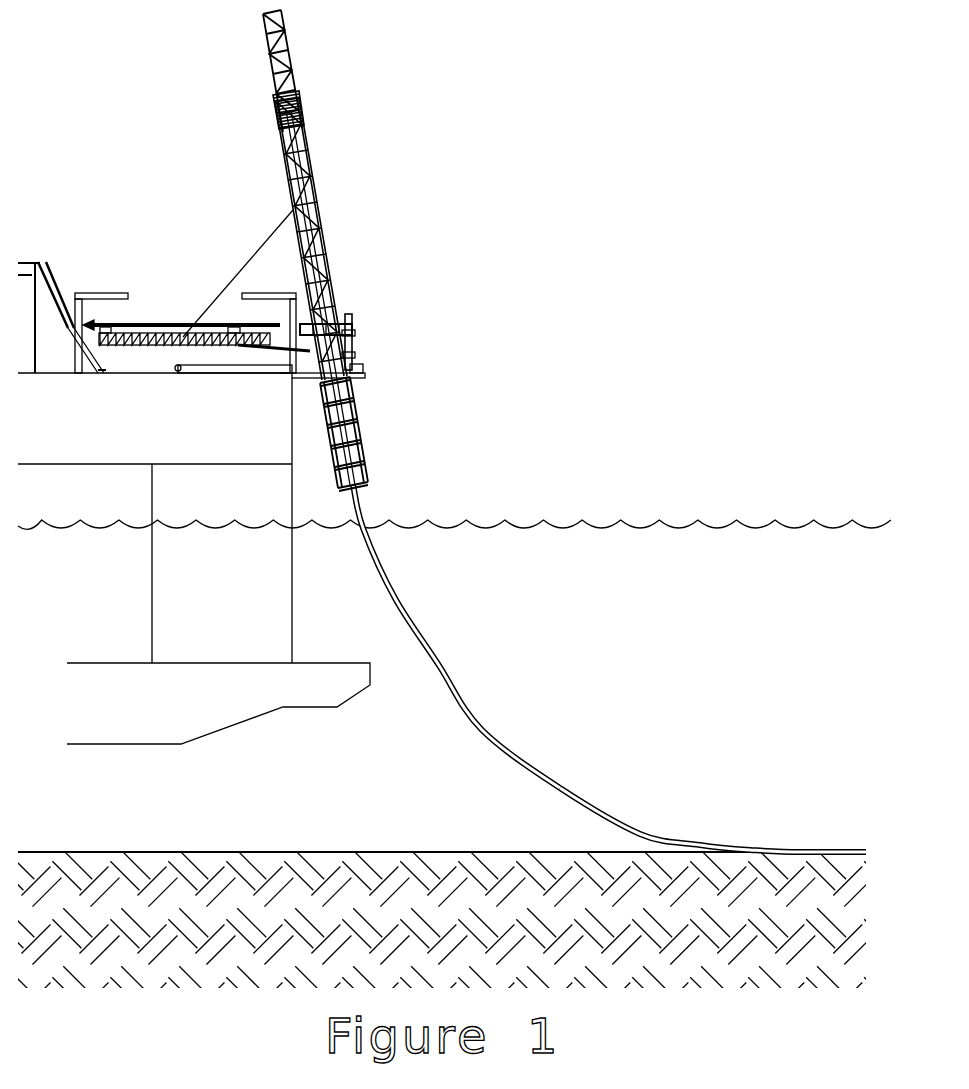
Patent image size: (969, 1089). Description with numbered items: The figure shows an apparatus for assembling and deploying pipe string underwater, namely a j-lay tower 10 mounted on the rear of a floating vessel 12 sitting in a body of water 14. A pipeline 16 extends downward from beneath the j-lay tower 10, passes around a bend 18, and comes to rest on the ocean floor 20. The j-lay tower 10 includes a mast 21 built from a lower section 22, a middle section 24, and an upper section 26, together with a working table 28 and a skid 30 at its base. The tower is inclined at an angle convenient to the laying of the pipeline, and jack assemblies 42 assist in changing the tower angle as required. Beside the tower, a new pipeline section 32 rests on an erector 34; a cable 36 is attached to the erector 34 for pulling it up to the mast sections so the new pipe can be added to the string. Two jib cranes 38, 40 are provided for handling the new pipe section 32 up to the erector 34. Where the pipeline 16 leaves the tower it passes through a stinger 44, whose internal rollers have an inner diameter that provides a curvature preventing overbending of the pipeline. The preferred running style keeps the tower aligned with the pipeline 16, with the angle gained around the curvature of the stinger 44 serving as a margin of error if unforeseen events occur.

The j-lay tower 10 is at (269, 250).
The floating vessel 12 is at (163, 490).
The body of water 14 is at (550, 523).
The pipeline 16 is at (435, 668).
The bend 18 is at (498, 737).
The ocean floor 20 is at (222, 850).
The mast 21 is at (351, 75).
The lower section 22 is at (332, 267).
The middle section 24 is at (313, 141).
The upper section 26 is at (292, 47).
The working table 28 is at (355, 330).
The skid 30 is at (365, 370).
The new pipeline section 32 is at (157, 322).
The erector 34 is at (150, 345).
The cable 36 is at (262, 242).
The jib crane 38 is at (250, 293).
The jib crane 40 is at (83, 293).
The jack assemblies 42 is at (352, 348).
The stinger 44 is at (362, 427).